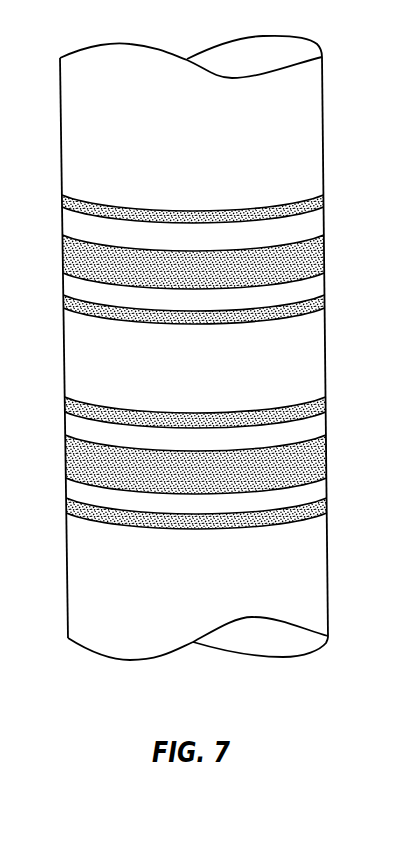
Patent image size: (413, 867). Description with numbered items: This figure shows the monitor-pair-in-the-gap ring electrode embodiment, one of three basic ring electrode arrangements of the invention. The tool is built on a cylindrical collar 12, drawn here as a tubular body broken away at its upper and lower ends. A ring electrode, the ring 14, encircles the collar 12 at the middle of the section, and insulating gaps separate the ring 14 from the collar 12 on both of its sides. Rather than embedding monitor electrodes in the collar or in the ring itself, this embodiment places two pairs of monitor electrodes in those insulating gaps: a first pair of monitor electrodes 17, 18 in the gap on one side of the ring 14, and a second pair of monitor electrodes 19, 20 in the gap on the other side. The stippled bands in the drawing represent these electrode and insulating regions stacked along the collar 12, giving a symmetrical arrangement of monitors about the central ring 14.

The collar 12 is at (303, 137).
The ring 14 is at (305, 345).
The monitor electrode 17 is at (305, 228).
The monitor electrode 18 is at (305, 292).
The monitor electrode 19 is at (308, 430).
The monitor electrode 20 is at (308, 485).